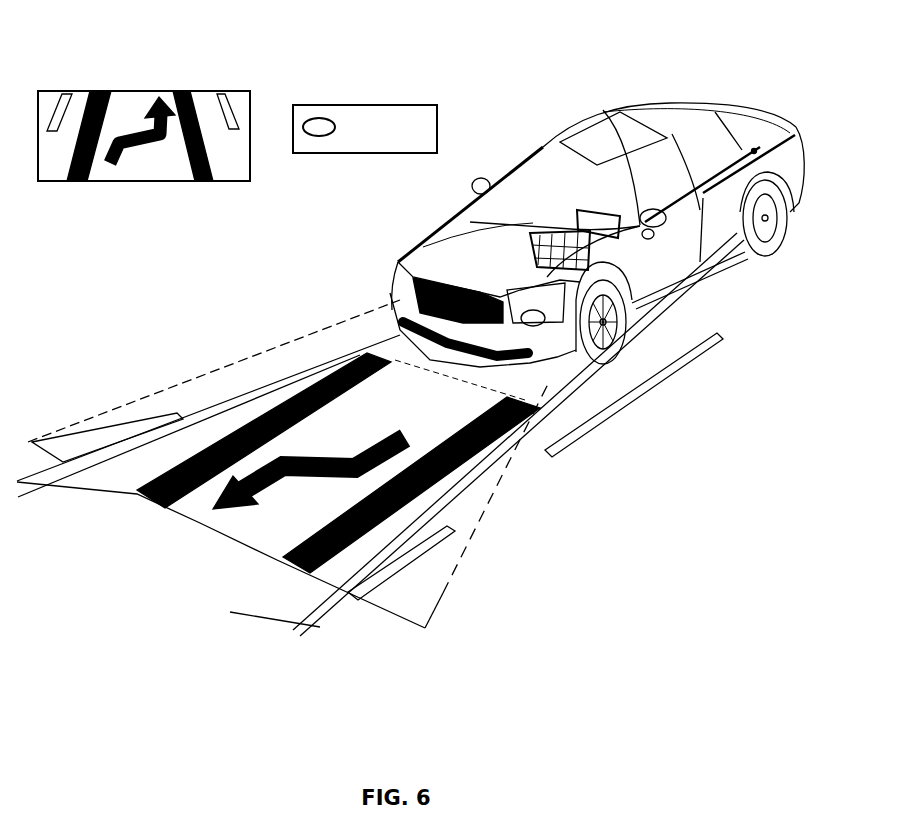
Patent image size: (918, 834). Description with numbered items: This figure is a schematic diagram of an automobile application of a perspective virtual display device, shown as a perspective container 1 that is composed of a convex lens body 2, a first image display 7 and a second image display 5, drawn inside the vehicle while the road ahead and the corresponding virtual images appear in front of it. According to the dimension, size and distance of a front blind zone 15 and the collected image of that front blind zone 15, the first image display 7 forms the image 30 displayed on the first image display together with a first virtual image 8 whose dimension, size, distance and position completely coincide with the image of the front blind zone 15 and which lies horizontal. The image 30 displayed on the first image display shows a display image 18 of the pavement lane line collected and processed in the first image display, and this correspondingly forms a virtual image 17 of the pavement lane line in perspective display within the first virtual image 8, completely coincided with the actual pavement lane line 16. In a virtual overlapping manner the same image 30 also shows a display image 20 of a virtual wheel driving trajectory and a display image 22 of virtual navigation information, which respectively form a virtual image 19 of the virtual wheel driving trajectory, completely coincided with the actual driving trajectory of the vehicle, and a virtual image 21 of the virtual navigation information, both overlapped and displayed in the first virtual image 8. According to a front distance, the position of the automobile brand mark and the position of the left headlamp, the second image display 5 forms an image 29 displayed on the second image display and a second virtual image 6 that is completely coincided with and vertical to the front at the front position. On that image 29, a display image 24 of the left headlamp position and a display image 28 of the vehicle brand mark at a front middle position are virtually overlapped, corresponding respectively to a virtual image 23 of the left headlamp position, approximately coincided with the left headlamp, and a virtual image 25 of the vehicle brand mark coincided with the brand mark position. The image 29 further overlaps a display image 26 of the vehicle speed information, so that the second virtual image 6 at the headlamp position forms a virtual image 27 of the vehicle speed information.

The perspective container 1 is at (713, 260).
The convex lens body 2 is at (597, 222).
The second image display 5 is at (567, 228).
The second virtual image 6 is at (415, 272).
The first image display 7 is at (533, 242).
The first virtual image 8 is at (190, 392).
The front blind zone 15 is at (457, 497).
The pavement lane line 16 is at (45, 481).
The virtual image of the pavement lane line 17 is at (410, 557).
The display image of the pavement lane line 18 is at (227, 93).
The virtual image of the virtual wheel driving trajectory 19 is at (320, 465).
The display image of the virtual wheel driving trajectory 20 is at (197, 91).
The virtual image of the virtual navigation information 21 is at (233, 357).
The display image of the virtual navigation information 22 is at (157, 142).
The virtual image of the left headlamp position 23 is at (627, 320).
The display image of the left headlamp position 24 is at (322, 118).
The virtual image of the vehicle brand mark 25 is at (470, 390).
The display image of the vehicle speed information 26 is at (377, 112).
The virtual image of the vehicle speed information 27 is at (450, 245).
The display image of the vehicle brand mark 28 is at (423, 112).
The image displayed on the second image display 29 is at (293, 155).
The image displayed on the first image display 30 is at (38, 181).